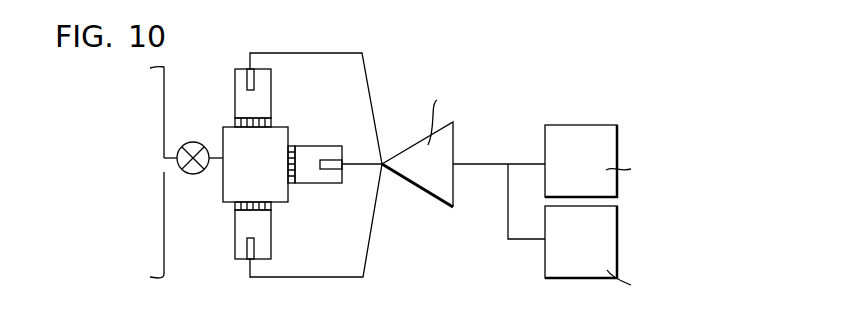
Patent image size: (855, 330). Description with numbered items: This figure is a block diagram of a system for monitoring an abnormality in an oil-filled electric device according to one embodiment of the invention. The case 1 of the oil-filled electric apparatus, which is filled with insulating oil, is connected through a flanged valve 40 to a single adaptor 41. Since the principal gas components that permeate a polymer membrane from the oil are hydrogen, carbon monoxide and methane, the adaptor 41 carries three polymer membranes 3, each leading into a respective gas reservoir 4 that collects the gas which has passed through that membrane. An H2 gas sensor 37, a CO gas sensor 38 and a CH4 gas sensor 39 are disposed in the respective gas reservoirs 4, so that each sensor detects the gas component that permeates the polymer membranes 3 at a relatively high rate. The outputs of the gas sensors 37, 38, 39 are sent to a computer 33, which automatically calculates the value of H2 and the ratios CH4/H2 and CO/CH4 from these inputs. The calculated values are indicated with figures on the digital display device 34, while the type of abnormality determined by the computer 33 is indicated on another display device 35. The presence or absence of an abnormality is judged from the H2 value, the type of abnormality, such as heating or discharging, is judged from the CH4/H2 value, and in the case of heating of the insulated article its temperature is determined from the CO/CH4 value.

The case 1 is at (165, 81).
The polymer membrane 3 is at (272, 121).
The gas reservoir 4 is at (288, 164).
The computer 33 is at (453, 140).
The digital display device 34 is at (617, 142).
The display device 35 is at (617, 248).
The H2 gas sensor 37 is at (253, 85).
The CO gas sensor 38 is at (323, 160).
The CH4 gas sensor 39 is at (250, 245).
The flanged valve 40 is at (193, 175).
The adaptor 41 is at (222, 126).